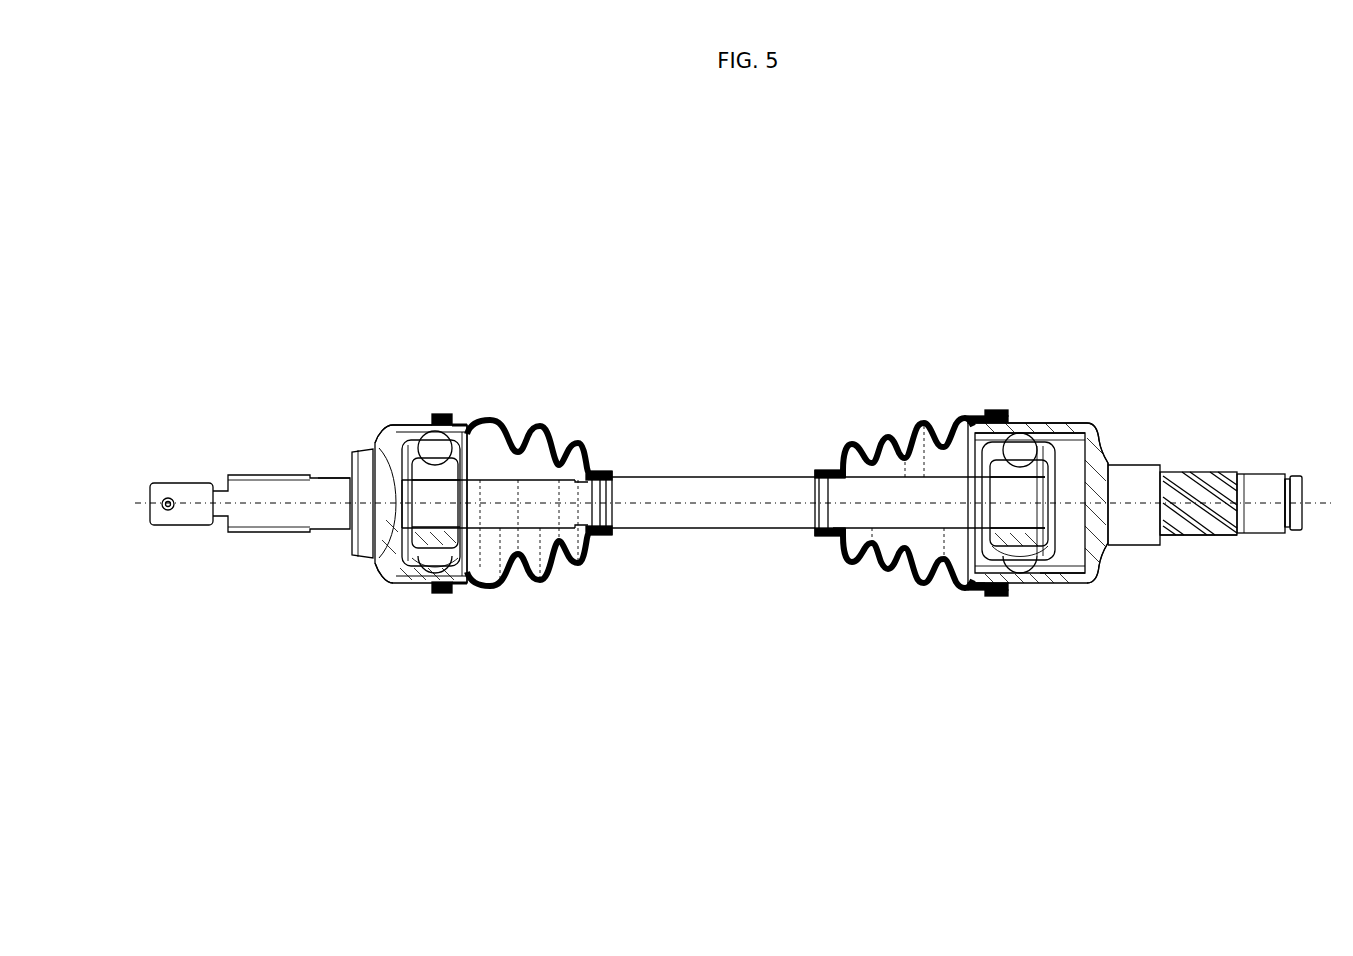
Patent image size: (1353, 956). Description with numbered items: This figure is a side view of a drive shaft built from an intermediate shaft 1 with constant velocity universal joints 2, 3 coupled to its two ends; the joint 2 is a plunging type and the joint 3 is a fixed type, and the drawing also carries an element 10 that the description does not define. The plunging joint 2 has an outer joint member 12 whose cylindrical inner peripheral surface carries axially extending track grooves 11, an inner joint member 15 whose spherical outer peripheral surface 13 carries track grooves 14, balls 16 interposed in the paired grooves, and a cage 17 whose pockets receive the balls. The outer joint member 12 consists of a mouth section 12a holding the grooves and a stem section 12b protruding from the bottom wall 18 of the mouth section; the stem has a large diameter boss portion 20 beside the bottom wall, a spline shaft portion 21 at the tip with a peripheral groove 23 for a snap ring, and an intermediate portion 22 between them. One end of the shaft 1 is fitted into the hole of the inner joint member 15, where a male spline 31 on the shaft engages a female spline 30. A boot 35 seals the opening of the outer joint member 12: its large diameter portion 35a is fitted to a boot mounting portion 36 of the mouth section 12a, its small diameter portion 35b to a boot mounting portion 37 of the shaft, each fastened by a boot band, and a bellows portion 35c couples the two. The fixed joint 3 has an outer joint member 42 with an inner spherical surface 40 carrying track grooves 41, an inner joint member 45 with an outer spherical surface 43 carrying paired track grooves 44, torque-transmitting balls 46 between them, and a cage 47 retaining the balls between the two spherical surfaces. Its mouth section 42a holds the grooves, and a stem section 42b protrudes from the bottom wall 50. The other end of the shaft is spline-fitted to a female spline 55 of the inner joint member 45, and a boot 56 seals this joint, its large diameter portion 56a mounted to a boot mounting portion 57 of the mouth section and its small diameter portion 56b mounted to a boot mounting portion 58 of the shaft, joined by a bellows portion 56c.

The intermediate shaft 1 is at (720, 532).
The constant velocity universal joint 2 is at (1050, 410).
The constant velocity universal joint 3 is at (404, 418).
The outer joint member 10 is at (1070, 583).
The track grooves 11 is at (1072, 430).
The outer joint member 12 is at (1100, 582).
The mouth section 12a is at (1050, 583).
The stem section 12b is at (1214, 537).
The spherical outer peripheral surface 13 is at (1020, 583).
The track grooves 14 is at (1000, 438).
The inner joint member 15 is at (950, 482).
The balls 16 is at (1020, 432).
The cage 17 is at (1030, 583).
The bottom wall 18 is at (1098, 442).
The boss portion 20 is at (1137, 532).
The spline shaft portion 21 is at (1262, 473).
The intermediate portion 22 is at (1196, 471).
The peripheral groove 23 is at (1280, 522).
The female spline 30 is at (1110, 463).
The male spline 31 is at (966, 585).
The boot 35 is at (893, 568).
The large diameter portion 35a is at (1000, 422).
The small diameter portion 35b is at (834, 468).
The bellows portion 35c is at (882, 440).
The boot mounting portion 36 is at (994, 593).
The boot mounting portion 37 is at (824, 536).
The inner spherical surface 40 is at (428, 568).
The track grooves 41 is at (455, 438).
The outer joint member 42 is at (396, 575).
The mouth section 42a is at (393, 432).
The stem section 42b is at (265, 523).
The outer spherical surface 43 is at (458, 578).
The track grooves 44 is at (470, 440).
The inner joint member 45 is at (505, 478).
The balls 46 is at (442, 425).
The cage 47 is at (490, 588).
The bottom wall 50 is at (368, 566).
The female spline 55 is at (365, 478).
The boot 56 is at (356, 548).
The large diameter portion 56a is at (437, 423).
The small diameter portion 56b is at (598, 468).
The bellows portion 56c is at (541, 584).
The boot mounting portion 57 is at (440, 592).
The boot mounting portion 58 is at (614, 490).